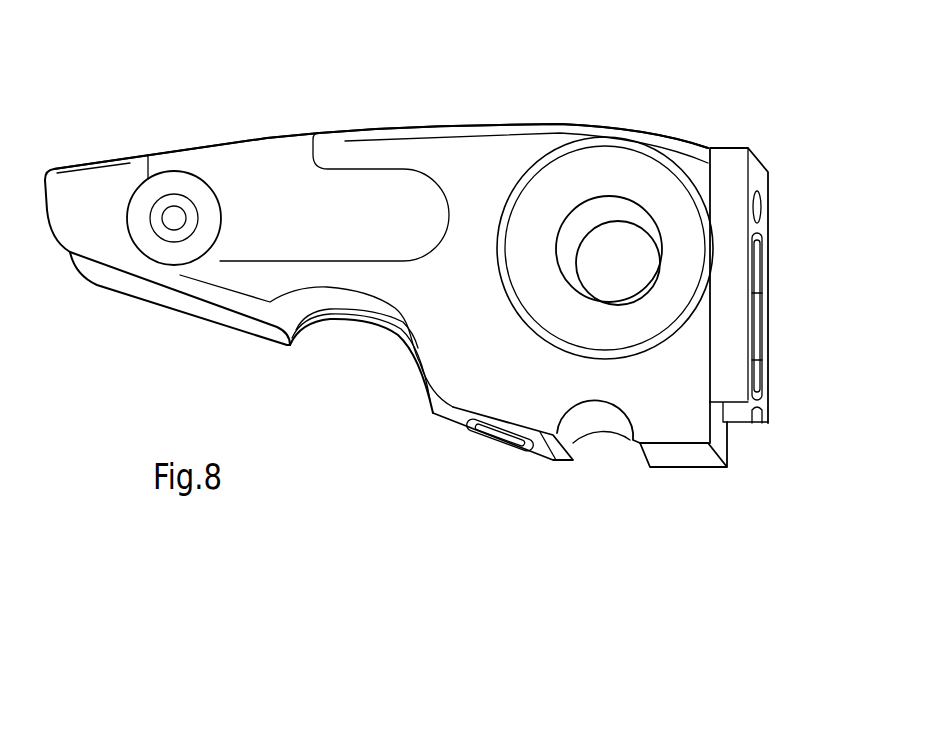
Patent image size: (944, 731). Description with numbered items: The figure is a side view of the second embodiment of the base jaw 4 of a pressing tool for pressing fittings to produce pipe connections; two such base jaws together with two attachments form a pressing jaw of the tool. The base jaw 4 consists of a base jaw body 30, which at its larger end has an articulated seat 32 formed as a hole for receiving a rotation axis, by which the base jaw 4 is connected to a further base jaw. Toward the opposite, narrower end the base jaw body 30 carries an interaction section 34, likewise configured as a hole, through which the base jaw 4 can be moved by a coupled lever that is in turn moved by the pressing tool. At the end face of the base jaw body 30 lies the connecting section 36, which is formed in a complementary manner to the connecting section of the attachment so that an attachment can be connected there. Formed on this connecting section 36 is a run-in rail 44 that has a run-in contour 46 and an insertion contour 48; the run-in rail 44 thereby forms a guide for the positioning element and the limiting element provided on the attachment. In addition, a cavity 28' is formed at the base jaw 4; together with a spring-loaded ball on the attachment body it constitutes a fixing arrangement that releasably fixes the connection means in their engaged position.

The base jaw 4 is at (406, 295).
The base jaw body 30 is at (472, 150).
The articulated seat 32 is at (623, 248).
The interaction section 34 is at (173, 197).
The connecting section 36 is at (792, 166).
The cavity 28' is at (798, 200).
The run-in rail 44 is at (762, 231).
The insertion contour 48 is at (757, 327).
The run-in contour 46 is at (752, 412).